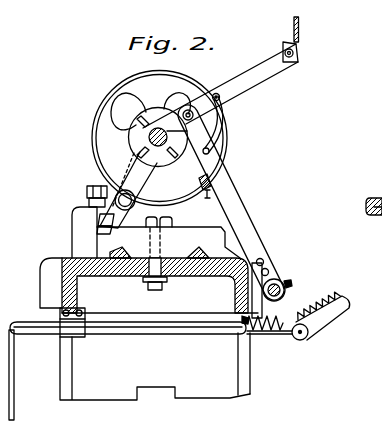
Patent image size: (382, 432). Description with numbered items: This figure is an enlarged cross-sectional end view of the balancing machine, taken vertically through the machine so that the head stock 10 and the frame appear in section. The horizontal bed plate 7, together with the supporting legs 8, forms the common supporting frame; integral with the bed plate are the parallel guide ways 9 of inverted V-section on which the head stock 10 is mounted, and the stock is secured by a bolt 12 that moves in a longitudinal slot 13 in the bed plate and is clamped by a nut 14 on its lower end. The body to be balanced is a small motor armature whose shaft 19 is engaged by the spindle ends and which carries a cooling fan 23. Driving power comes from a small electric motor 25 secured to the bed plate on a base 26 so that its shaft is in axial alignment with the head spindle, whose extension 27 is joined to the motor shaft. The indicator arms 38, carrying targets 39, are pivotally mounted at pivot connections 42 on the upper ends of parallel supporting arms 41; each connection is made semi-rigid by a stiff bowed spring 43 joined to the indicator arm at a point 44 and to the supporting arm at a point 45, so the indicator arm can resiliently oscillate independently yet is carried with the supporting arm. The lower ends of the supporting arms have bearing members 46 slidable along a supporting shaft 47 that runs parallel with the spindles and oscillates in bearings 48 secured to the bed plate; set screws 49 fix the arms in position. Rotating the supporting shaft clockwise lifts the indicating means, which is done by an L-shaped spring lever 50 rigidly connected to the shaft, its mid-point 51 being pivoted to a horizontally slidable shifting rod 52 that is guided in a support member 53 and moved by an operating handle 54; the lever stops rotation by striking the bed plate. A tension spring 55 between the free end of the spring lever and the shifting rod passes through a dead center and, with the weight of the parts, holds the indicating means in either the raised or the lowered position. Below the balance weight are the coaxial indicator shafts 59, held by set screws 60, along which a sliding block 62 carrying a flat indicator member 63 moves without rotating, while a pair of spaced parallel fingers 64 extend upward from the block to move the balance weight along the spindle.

The bed plate 7 is at (79, 290).
The supporting legs 8 is at (72, 378).
The guide ways 9 is at (123, 249).
The head stock 10 is at (168, 242).
The bolt 12 is at (165, 224).
The longitudinal slot 13 is at (165, 258).
The clamping nut 14 is at (149, 288).
The shaft 19 is at (128, 137).
The cooling fan 23 is at (160, 149).
The electric motor 25 is at (112, 88).
The base 26 is at (72, 210).
The head spindle extension 27 is at (372, 198).
The indicator arms 38 is at (280, 72).
The targets 39 is at (299, 22).
The supporting arms 41 is at (240, 186).
The pivot connection 42 is at (189, 109).
The bowed spring 43 is at (223, 116).
The spring attachment point 44 is at (216, 93).
The spring attachment point 45 is at (210, 152).
The bearing members 46 is at (281, 266).
The supporting shaft 47 is at (286, 292).
The bearings 48 is at (252, 300).
The set screws 49 is at (292, 284).
The spring lever 50 is at (330, 320).
The pivotal connection 51 is at (306, 341).
The shifting rod 52 is at (171, 334).
The support member 53 is at (62, 338).
The operating handle 54 is at (15, 380).
The spring 55 is at (274, 335).
The indicator shafts 59 is at (136, 198).
The set screws 60 is at (127, 180).
The sliding block 62 is at (99, 234).
The indicator member 63 is at (100, 216).
The fingers 64 is at (156, 173).